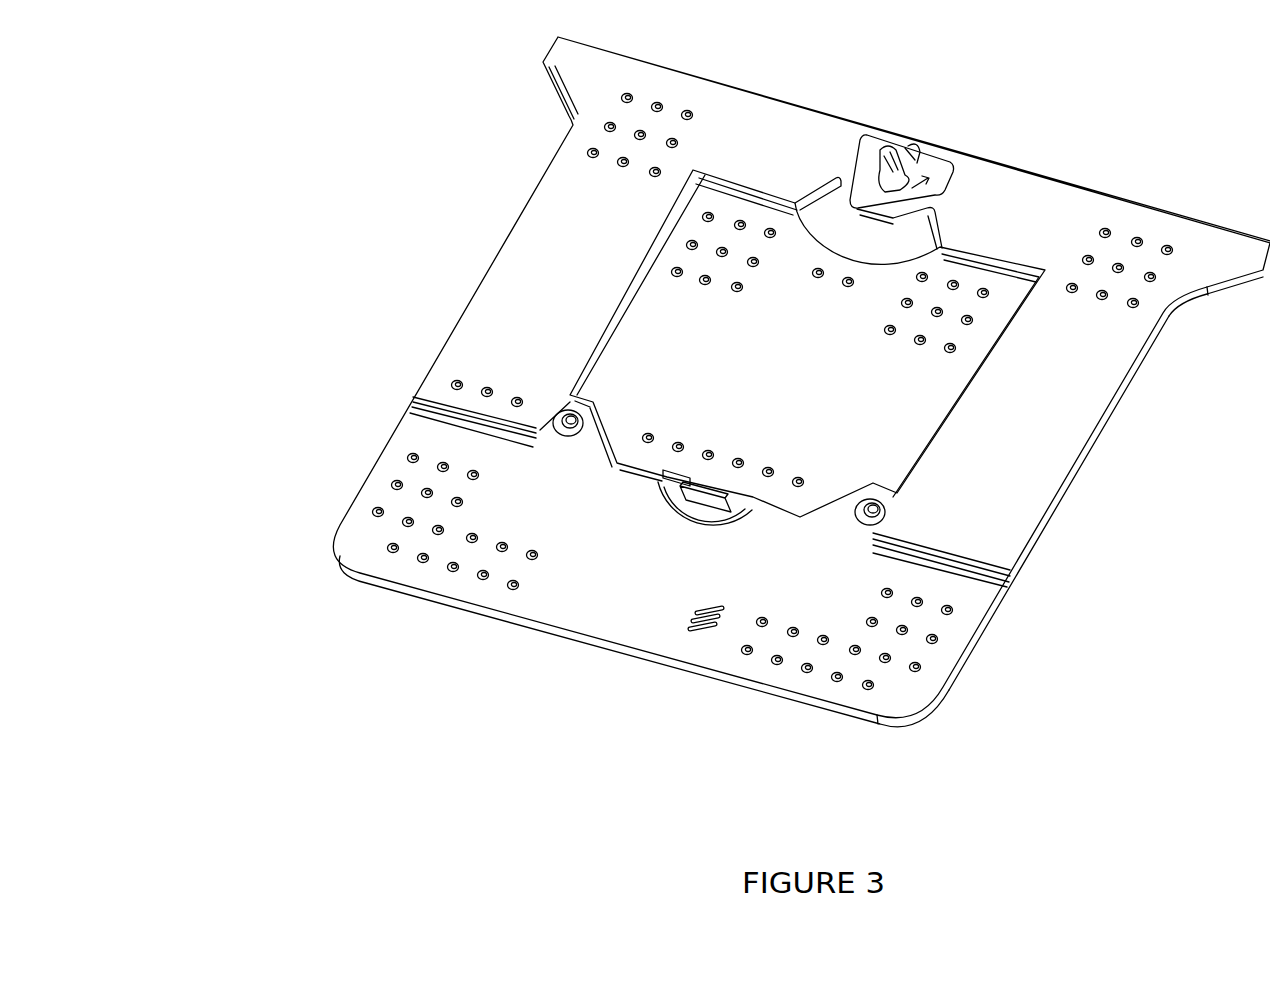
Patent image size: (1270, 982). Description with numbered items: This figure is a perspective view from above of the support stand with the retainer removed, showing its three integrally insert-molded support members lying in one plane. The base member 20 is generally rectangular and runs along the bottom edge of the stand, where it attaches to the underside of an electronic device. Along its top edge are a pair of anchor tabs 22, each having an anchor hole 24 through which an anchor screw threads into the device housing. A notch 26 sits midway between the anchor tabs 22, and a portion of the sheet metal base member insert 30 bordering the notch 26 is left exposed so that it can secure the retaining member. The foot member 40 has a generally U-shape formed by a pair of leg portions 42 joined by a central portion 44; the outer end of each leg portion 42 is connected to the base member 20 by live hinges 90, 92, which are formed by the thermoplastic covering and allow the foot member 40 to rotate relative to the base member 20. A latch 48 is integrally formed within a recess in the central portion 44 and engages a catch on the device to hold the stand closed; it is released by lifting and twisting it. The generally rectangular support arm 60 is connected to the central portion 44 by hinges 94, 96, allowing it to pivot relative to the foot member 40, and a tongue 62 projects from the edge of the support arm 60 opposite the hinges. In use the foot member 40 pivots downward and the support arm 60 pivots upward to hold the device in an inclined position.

The base member 20 is at (333, 543).
The anchor tabs 22 is at (578, 459).
The anchor hole 24 is at (555, 434).
The notch 26 is at (680, 526).
The base member insert 30 is at (669, 506).
The foot member 40 is at (1086, 481).
The leg portions 42 is at (511, 308).
The central portion 44 is at (818, 143).
The latch 48 is at (899, 232).
The support arm 60 is at (623, 277).
The tongue 62 is at (707, 511).
The live hinge 90 is at (460, 427).
The live hinge 92 is at (957, 572).
The hinge 94 is at (733, 193).
The hinge 96 is at (985, 260).